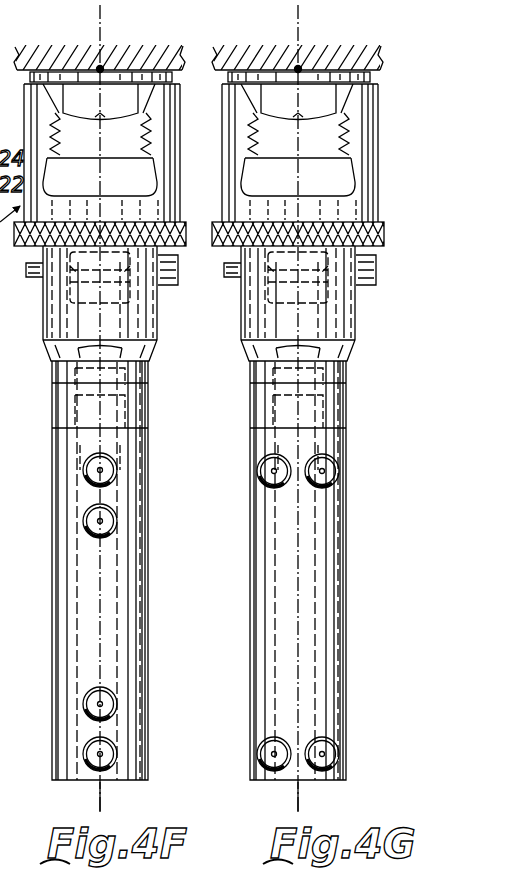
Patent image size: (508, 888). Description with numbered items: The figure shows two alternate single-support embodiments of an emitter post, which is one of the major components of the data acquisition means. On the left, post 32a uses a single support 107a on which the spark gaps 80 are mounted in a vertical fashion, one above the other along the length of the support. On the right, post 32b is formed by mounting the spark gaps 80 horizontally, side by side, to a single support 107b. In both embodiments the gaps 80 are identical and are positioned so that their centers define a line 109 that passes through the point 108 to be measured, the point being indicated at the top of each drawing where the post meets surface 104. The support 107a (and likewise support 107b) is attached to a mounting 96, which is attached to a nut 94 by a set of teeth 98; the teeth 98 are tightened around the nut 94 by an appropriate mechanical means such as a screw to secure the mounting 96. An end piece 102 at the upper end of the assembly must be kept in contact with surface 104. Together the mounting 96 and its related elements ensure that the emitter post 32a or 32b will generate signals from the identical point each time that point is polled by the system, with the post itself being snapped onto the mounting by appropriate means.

In FIG. 4F, the surface 104 is at (65, 63).
In FIG. 4G, the surface 104 is at (310, 44).
In FIG. 4F, the point to be measured 108 is at (129, 42).
In FIG. 4G, the point to be measured 108 is at (323, 43).
In FIG. 4F, the end piece 102 is at (67, 90).
In FIG. 4G, the end piece 102 is at (327, 153).
In FIG. 4F, the nut 94 is at (100, 119).
In FIG. 4G, the nut 94 is at (298, 119).
In FIG. 4F, the teeth 98 is at (100, 177).
In FIG. 4G, the teeth 98 is at (298, 177).
In FIG. 4F, the mounting 96 is at (105, 234).
In FIG. 4G, the mounting 96 is at (314, 209).
In FIG. 4F, the spark gaps 80 is at (136, 612).
In FIG. 4G, the spark gaps 80 is at (298, 611).
In FIG. 4F, the post 32a is at (53, 612).
In FIG. 4G, the post 32b is at (328, 570).
In FIG. 4F, the support 107a is at (40, 671).
In FIG. 4G, the support 107b is at (336, 570).
In FIG. 4F, the line 109 is at (145, 797).
In FIG. 4G, the line 109 is at (350, 796).